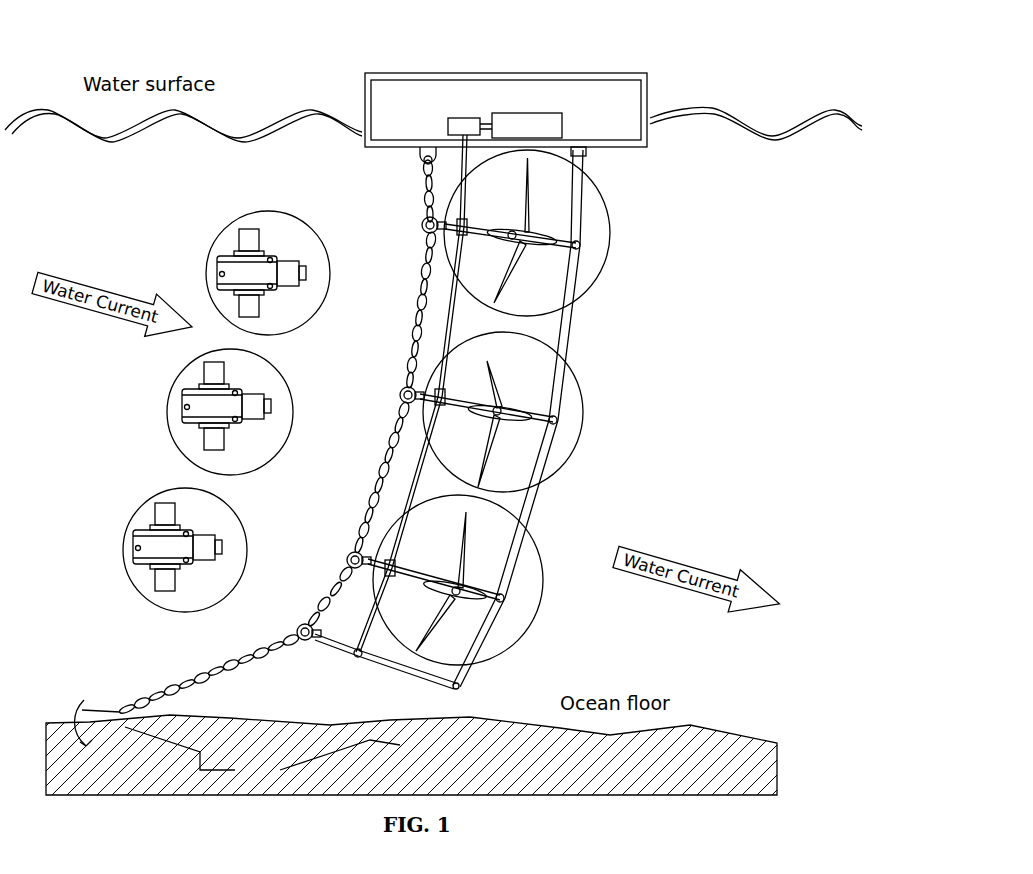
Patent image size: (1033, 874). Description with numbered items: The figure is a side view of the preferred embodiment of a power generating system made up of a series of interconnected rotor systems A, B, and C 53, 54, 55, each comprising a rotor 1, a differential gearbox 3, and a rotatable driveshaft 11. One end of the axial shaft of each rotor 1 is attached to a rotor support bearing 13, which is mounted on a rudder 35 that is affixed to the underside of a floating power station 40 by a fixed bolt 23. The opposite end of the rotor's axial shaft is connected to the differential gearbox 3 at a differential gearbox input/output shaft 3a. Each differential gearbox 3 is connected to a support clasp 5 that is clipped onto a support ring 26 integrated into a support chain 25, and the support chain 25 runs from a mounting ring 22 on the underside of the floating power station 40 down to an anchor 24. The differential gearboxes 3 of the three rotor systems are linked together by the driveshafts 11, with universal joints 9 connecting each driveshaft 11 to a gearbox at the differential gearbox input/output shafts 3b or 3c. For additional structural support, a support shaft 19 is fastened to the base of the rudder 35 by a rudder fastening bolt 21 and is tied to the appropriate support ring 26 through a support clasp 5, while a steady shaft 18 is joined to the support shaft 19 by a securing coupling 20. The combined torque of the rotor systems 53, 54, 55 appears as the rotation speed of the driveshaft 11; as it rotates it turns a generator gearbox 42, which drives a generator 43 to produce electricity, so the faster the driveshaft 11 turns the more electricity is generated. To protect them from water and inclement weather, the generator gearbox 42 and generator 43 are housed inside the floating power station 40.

The rotor 1 is at (528, 250).
The differential gearbox 3 is at (330, 272).
The differential gearbox input/output shaft 3a is at (302, 278).
The differential gearbox input/output shaft 3b is at (250, 232).
The differential gearbox input/output shaft 3c is at (252, 316).
The support clasp 5 is at (422, 224).
The universal joint 9 is at (462, 215).
The driveshaft 11 is at (463, 180).
The rotor support bearing 13 is at (582, 246).
The steady shaft 18 is at (356, 648).
The support shaft 19 is at (395, 673).
The securing coupling 20 is at (358, 658).
The rudder fastening bolt 21 is at (458, 689).
The mounting ring 22 is at (418, 158).
The fixed bolt 23 is at (586, 153).
The anchor 24 is at (84, 700).
The support chain 25 is at (425, 188).
The support ring 26 is at (438, 230).
The rudder 35 is at (583, 192).
The floating power station 40 is at (600, 75).
The generator gearbox 42 is at (462, 120).
The generator 43 is at (548, 122).
The rotor system A 53 is at (540, 630).
The rotor system B 54 is at (575, 468).
The rotor system C 55 is at (585, 300).